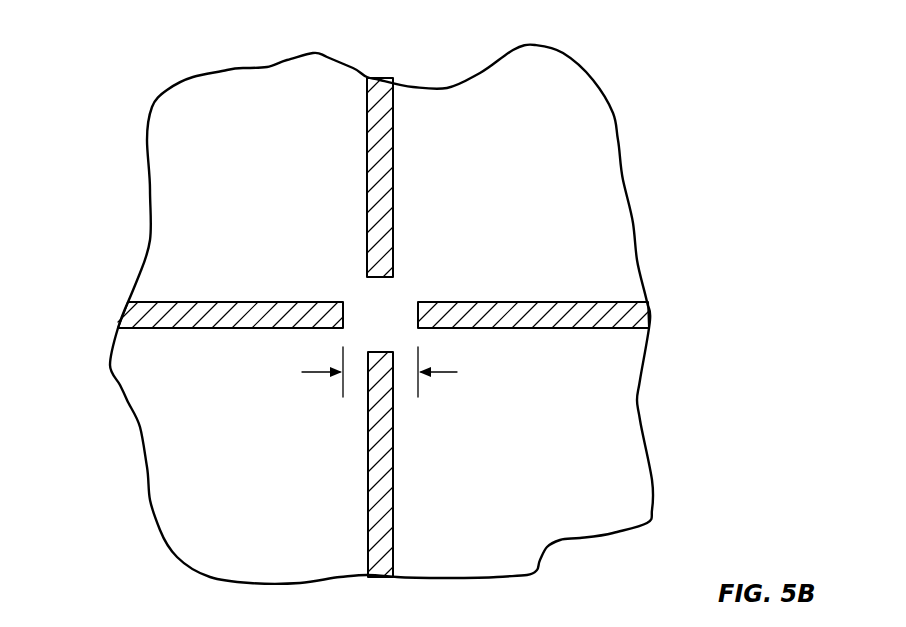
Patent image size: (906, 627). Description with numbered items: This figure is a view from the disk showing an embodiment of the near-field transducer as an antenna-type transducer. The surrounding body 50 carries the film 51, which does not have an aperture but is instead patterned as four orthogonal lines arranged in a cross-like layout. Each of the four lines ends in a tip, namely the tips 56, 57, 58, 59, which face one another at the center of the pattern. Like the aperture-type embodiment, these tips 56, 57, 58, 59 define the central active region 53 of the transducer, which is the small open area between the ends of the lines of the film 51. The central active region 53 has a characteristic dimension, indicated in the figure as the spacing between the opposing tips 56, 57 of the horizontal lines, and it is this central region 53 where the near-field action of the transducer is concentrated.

The substrate body 50 is at (381, 314).
The film 51 is at (382, 330).
The central active region 53 is at (373, 303).
The tip 56 is at (317, 302).
The tip 57 is at (432, 306).
The tip 58 is at (375, 262).
The tip 59 is at (371, 369).